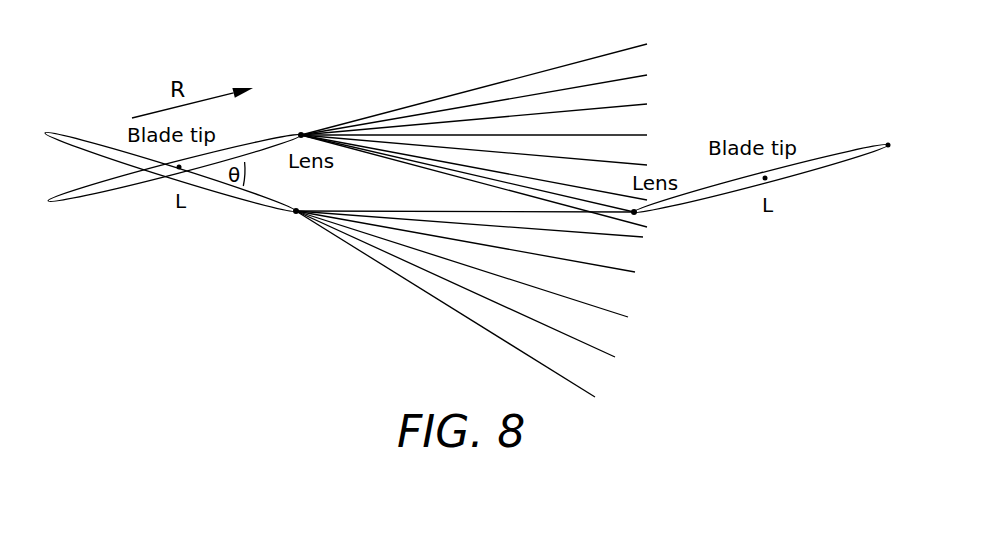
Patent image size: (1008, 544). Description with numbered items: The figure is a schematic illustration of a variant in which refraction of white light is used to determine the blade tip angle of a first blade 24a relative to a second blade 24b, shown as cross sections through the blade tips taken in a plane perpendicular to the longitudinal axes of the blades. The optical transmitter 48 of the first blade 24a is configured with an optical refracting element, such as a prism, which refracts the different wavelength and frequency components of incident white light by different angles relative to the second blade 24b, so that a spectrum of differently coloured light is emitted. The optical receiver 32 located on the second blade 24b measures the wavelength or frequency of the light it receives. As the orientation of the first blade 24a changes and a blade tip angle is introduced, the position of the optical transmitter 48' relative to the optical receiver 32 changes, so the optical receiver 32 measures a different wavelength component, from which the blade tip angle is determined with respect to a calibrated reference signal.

The first blade 24a is at (65, 194).
The optical transmitter 48 is at (472, 135).
The optical transmitter 48' is at (456, 302).
The optical receiver 32 is at (637, 213).
The second blade 24b is at (815, 175).